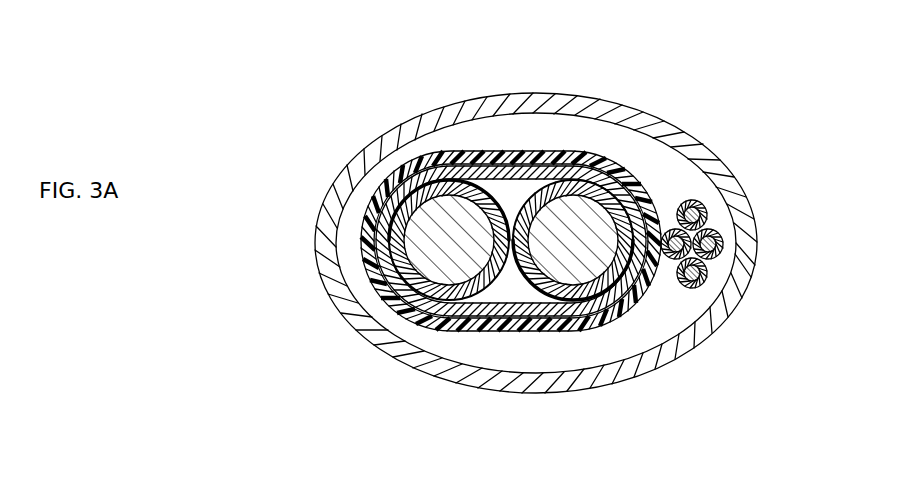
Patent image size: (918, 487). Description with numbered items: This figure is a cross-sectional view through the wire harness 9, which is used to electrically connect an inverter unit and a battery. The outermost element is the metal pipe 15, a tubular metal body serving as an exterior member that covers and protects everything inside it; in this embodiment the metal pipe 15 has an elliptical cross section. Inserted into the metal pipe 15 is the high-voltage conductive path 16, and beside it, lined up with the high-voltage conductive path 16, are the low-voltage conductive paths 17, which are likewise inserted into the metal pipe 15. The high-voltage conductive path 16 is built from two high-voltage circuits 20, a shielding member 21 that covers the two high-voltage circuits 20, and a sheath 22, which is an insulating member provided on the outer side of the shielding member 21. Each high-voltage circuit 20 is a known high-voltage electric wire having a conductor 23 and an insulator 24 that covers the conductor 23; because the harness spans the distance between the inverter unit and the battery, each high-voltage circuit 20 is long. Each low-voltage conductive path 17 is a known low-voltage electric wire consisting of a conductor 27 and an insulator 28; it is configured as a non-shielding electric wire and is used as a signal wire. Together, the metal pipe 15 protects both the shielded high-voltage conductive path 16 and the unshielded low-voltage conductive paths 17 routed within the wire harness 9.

The wire harness 9 is at (497, 72).
The metal pipe 15 is at (405, 138).
The high-voltage conductive path 16 is at (537, 150).
The low-voltage conductive path 17 is at (742, 201).
The high-voltage circuit 20 is at (425, 333).
The shielding member 21 is at (493, 314).
The sheath 22 is at (431, 331).
The conductor 23 is at (405, 238).
The insulator 24 is at (400, 288).
The conductor 27 is at (697, 208).
The insulator 28 is at (707, 205).